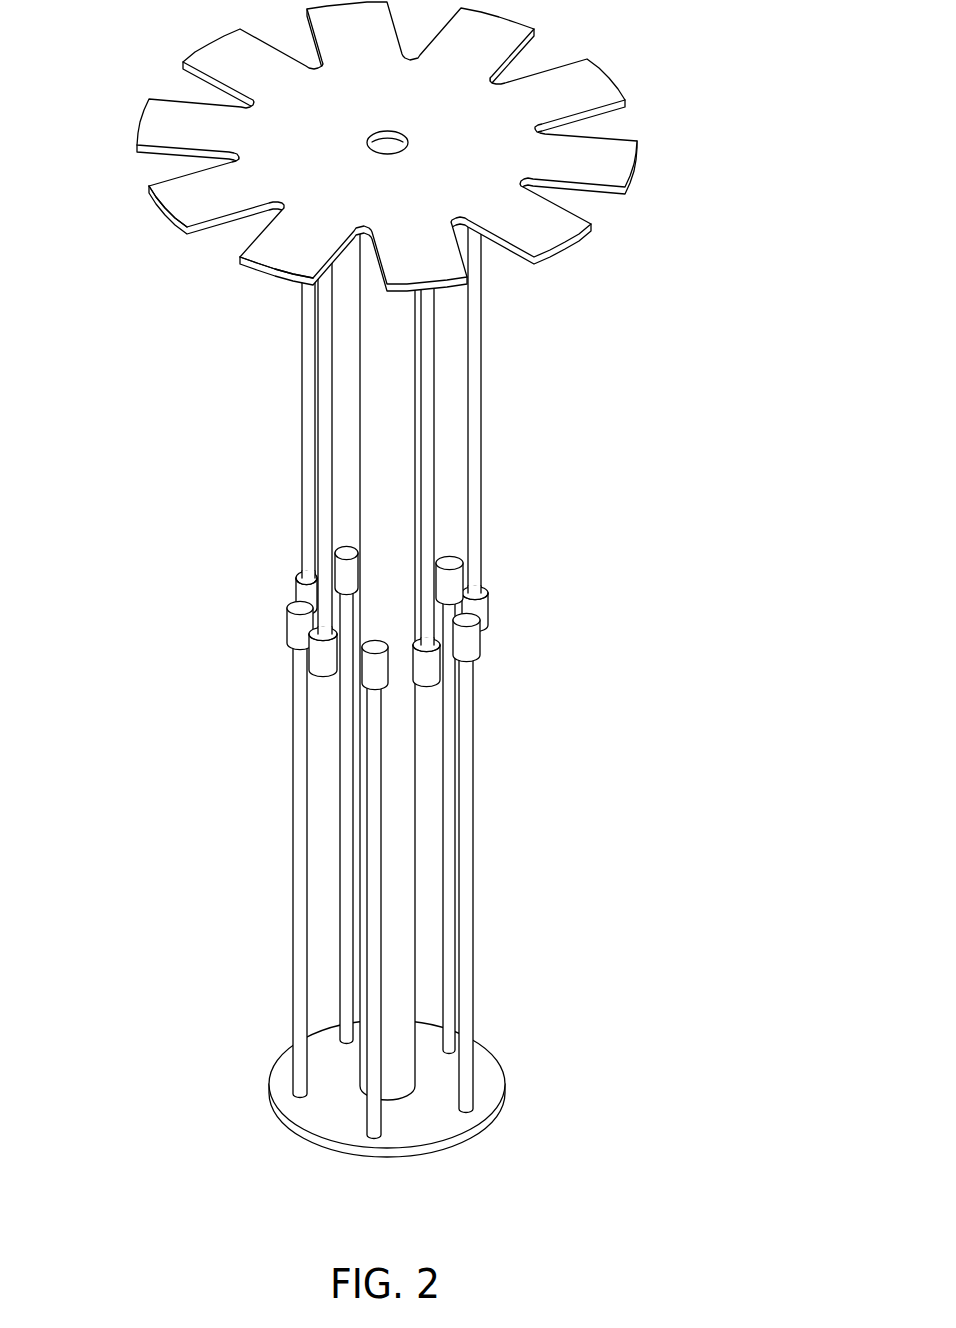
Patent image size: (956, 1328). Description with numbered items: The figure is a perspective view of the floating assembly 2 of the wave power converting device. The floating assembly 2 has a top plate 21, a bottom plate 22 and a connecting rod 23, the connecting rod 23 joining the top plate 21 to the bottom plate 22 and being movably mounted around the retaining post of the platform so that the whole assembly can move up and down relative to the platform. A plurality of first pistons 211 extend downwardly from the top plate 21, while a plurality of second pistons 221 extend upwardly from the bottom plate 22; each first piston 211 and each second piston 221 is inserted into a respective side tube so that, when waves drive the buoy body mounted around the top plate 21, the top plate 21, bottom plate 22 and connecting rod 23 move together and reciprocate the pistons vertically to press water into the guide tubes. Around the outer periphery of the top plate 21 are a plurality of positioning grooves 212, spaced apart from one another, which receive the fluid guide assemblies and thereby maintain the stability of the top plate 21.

The floating assembly 2 is at (372, 579).
The top plate 21 is at (605, 165).
The first pistons 211 is at (487, 613).
The positioning grooves 212 is at (237, 235).
The bottom plate 22 is at (490, 1085).
The second pistons 221 is at (480, 650).
The connecting rod 23 is at (400, 853).